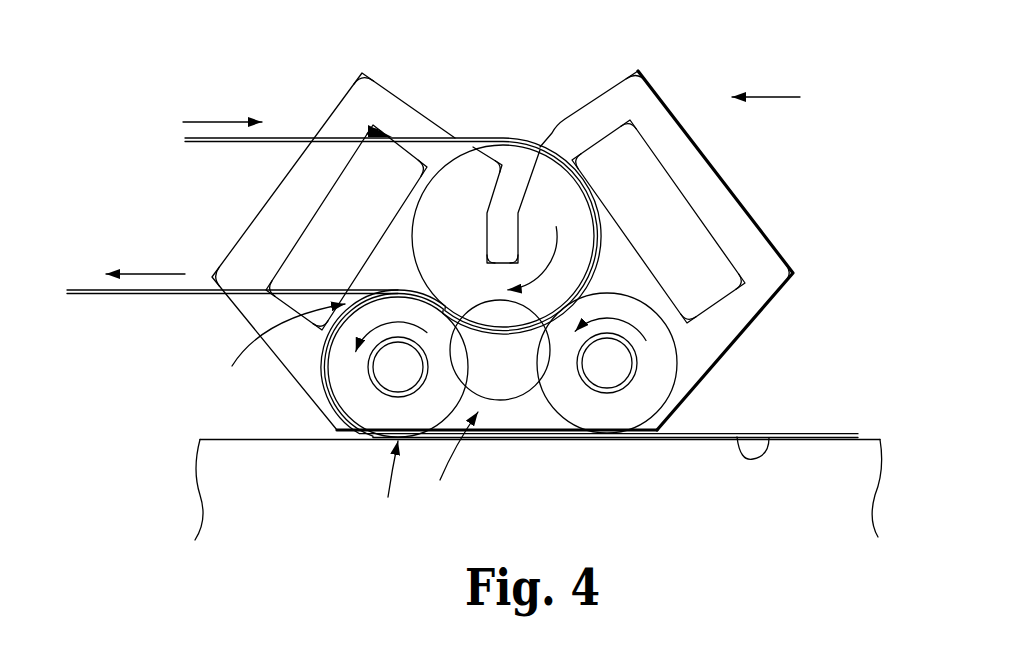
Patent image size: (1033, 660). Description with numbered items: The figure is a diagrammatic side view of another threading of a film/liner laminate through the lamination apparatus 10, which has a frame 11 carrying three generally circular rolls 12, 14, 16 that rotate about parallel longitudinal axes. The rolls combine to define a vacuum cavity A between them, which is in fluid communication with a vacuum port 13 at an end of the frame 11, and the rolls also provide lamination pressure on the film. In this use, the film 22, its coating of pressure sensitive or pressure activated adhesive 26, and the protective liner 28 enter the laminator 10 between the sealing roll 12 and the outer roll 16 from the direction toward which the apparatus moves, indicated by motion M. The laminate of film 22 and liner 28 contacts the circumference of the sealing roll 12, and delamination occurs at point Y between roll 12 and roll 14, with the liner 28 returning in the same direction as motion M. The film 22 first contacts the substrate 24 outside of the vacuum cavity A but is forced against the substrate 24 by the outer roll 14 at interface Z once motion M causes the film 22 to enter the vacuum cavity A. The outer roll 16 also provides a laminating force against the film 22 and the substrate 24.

The lamination apparatus 10 is at (523, 82).
The frame 11 is at (628, 108).
The sealing roll 12 is at (548, 203).
The vacuum port 13 is at (502, 390).
The outer roll 14 is at (357, 381).
The outer roll 16 is at (648, 333).
The film 22 is at (416, 139).
The substrate 24 is at (833, 462).
The adhesive 26 is at (286, 138).
The liner 28 is at (218, 143).
The motion M is at (777, 94).
The point of delamination Y is at (278, 347).
The interface Z is at (389, 482).
The vacuum cavity A is at (451, 459).